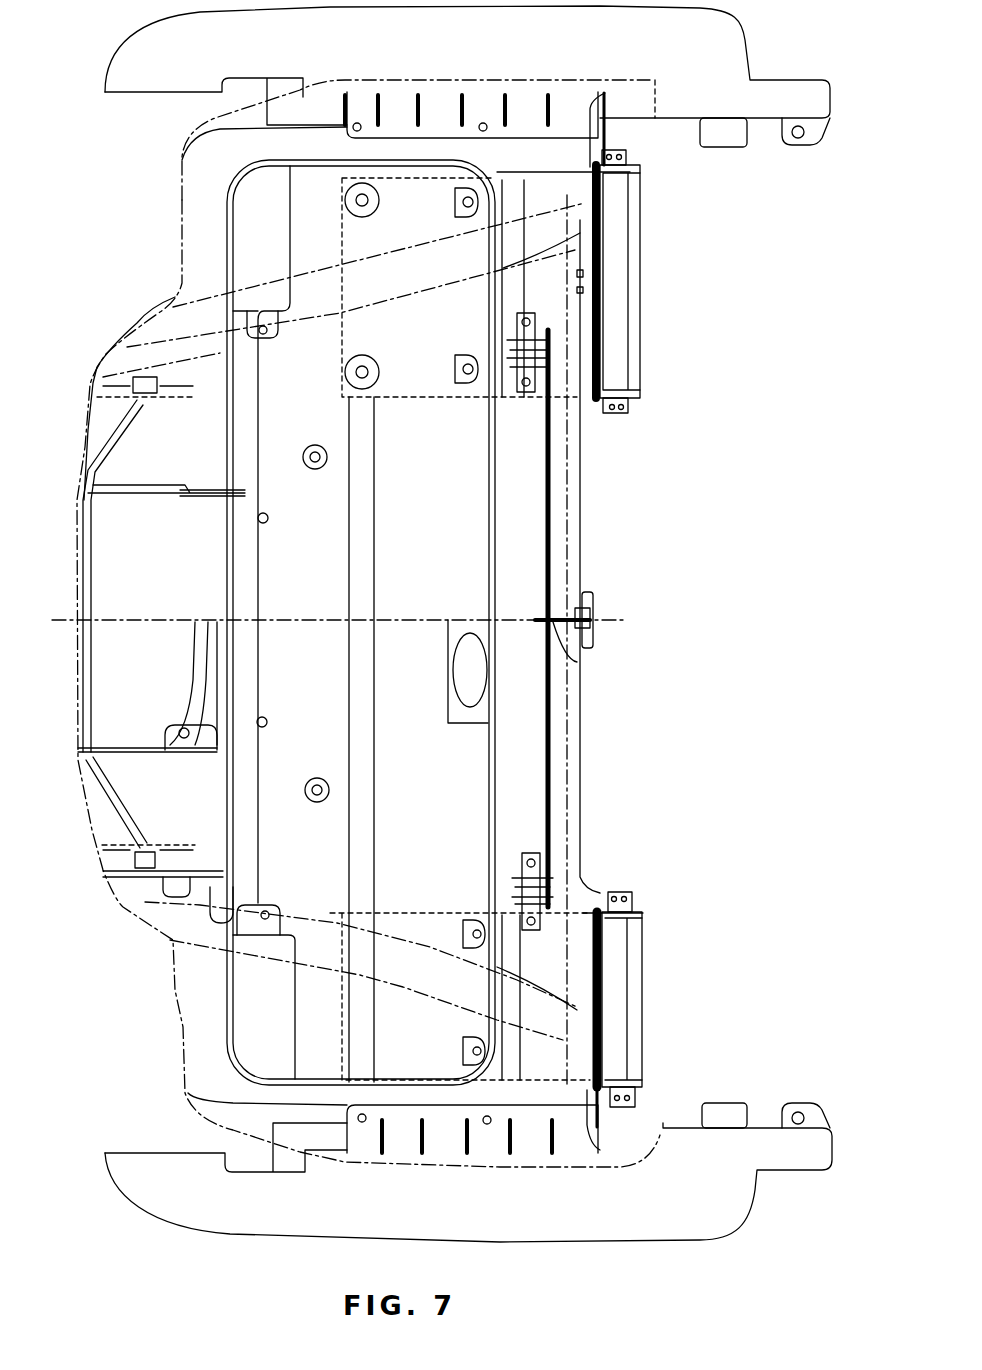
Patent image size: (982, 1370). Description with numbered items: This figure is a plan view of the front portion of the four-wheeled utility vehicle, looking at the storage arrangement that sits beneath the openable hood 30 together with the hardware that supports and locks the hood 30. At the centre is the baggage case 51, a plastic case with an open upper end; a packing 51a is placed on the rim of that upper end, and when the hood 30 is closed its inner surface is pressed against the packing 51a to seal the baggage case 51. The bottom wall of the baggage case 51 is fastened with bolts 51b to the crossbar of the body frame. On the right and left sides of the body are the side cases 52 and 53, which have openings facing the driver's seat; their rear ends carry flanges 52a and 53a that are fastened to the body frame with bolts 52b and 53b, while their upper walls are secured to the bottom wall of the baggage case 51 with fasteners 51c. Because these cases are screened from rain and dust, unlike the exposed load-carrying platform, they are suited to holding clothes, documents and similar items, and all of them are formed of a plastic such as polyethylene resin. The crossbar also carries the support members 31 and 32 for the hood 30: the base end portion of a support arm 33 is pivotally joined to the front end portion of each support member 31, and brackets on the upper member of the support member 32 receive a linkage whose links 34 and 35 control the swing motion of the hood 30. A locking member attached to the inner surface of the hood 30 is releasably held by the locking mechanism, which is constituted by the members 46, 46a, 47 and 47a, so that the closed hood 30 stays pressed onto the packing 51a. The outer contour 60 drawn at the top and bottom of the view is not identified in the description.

The hood 30 is at (188, 250).
The support member 31 is at (132, 753).
The support member 32 is at (210, 897).
The support arm 33 is at (90, 683).
The link 34 is at (123, 910).
The link 35 is at (140, 901).
The locking mechanism member 46 is at (550, 880).
The locking mechanism member 46a is at (557, 727).
The locking mechanism member 47 is at (593, 597).
The locking mechanism member 47a is at (577, 662).
The baggage case 51 is at (470, 502).
The packing 51a is at (500, 540).
The bolt 51b is at (267, 515).
The fastener 51c is at (467, 380).
The side case 52 is at (617, 1017).
The flange 52a is at (602, 890).
The bolt 52b is at (628, 898).
The side case 53 is at (615, 238).
The flange 53a is at (597, 417).
The bolt 53b is at (630, 408).
The cover 60 is at (745, 40).